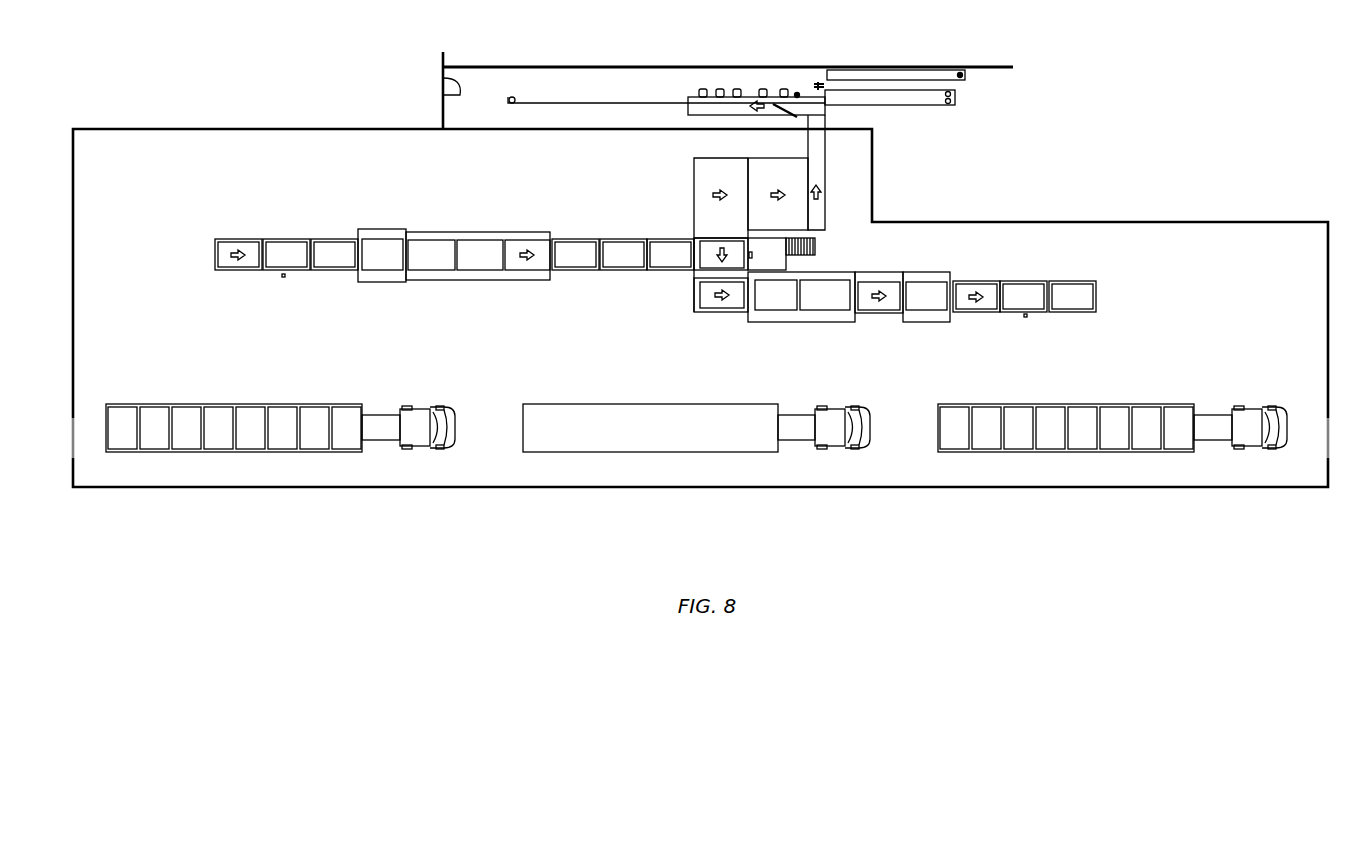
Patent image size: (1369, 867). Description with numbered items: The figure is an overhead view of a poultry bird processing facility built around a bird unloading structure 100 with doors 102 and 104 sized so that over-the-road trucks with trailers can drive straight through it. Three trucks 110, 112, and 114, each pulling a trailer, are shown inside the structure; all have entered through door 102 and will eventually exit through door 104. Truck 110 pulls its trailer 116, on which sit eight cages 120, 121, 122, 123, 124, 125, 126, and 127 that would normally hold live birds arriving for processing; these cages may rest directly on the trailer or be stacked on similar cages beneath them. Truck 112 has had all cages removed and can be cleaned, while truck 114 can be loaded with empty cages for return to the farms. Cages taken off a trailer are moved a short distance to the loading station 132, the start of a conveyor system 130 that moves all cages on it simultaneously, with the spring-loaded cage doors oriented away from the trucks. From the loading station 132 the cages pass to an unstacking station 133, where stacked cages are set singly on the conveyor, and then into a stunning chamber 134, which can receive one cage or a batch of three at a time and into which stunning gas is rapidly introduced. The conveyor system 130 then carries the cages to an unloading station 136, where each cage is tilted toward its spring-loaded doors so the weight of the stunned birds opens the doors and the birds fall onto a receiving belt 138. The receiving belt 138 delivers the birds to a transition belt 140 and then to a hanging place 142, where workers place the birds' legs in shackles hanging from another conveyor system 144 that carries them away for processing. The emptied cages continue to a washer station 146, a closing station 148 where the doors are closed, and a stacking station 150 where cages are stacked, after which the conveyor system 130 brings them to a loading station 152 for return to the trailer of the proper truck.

The bird unloading structure 100 is at (204, 128).
The door 102 is at (73, 420).
The door 104 is at (1330, 420).
The over-the-road truck 110 is at (273, 444).
The over-the-road truck 112 is at (828, 430).
The over-the-road truck 114 is at (1245, 430).
The trailer 116 is at (226, 421).
The cage 120 is at (343, 410).
The cage 121 is at (313, 410).
The cage 122 is at (280, 410).
The cage 123 is at (251, 410).
The cage 124 is at (217, 410).
The cage 125 is at (189, 410).
The cage 126 is at (157, 410).
The cage 127 is at (125, 410).
The conveyor system 130 is at (621, 218).
The loading station 132 is at (222, 262).
The unstacking station 133 is at (380, 260).
The stunning chamber 134 is at (478, 280).
The unloading station 136 is at (707, 262).
The receiving belt 138 is at (713, 182).
The transition belt 140 is at (784, 178).
The hanging place 142 is at (730, 100).
The conveyor system 144 is at (570, 103).
The washer station 146 is at (800, 322).
The closing station 148 is at (893, 300).
The stacking station 150 is at (937, 300).
The loading station 152 is at (1070, 300).